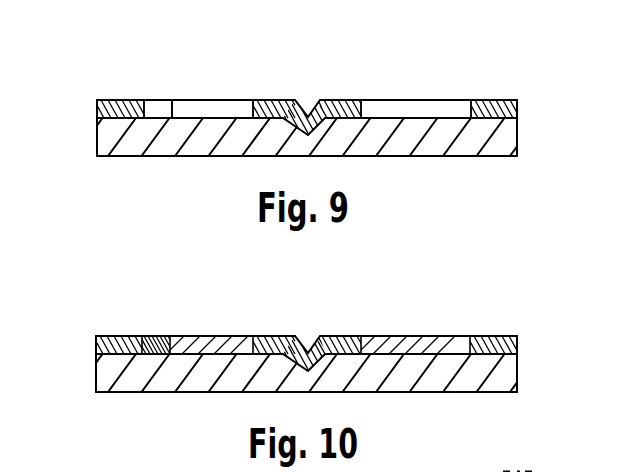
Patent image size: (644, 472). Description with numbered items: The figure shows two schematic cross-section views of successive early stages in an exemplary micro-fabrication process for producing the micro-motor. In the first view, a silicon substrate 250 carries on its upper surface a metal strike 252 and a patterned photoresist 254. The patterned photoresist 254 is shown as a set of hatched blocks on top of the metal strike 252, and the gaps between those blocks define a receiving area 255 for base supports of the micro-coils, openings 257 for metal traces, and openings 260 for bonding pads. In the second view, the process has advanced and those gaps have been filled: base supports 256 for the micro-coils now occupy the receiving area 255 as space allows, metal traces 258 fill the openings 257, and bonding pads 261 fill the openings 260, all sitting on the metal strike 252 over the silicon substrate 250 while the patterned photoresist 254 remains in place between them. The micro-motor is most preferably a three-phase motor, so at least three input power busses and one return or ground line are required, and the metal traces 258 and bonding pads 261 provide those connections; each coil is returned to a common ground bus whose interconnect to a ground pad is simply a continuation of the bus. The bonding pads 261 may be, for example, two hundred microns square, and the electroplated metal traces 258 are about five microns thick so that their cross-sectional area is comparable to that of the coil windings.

In FIG. 9, the silicon substrate 250 is at (508, 134).
In FIG. 10, the silicon substrate 250 is at (330, 374).
In FIG. 9, the metal strike 252 is at (517, 118).
In FIG. 10, the metal strike 252 is at (339, 329).
In FIG. 9, the patterned photoresist 254 is at (115, 100).
In FIG. 10, the patterned photoresist 254 is at (298, 326).
In FIG. 9, the receiving area 255 is at (402, 116).
In FIG. 10, the base supports 256 is at (408, 322).
In FIG. 9, the openings 257 is at (213, 100).
In FIG. 10, the metal traces 258 is at (213, 323).
In FIG. 9, the openings 260 is at (160, 100).
In FIG. 10, the bonding pads 261 is at (151, 308).